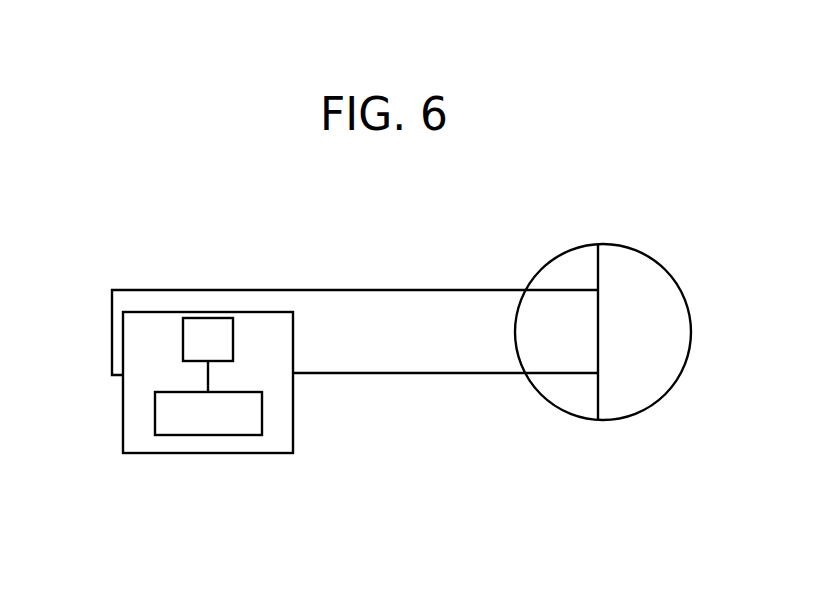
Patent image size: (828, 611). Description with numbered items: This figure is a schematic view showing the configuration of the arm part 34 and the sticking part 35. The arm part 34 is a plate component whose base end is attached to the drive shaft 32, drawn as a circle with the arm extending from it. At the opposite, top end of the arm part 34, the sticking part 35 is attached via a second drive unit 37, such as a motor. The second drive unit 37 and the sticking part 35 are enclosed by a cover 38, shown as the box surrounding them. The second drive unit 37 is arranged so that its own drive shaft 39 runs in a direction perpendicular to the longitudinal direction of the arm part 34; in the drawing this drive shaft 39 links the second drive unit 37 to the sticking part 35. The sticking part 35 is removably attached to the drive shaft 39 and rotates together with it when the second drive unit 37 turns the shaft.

The drive shaft 32 is at (600, 268).
The arm part 34 is at (351, 282).
The sticking part 35 is at (239, 425).
The second drive unit 37 is at (208, 317).
The cover 38 is at (293, 420).
The drive shaft 39 is at (208, 376).